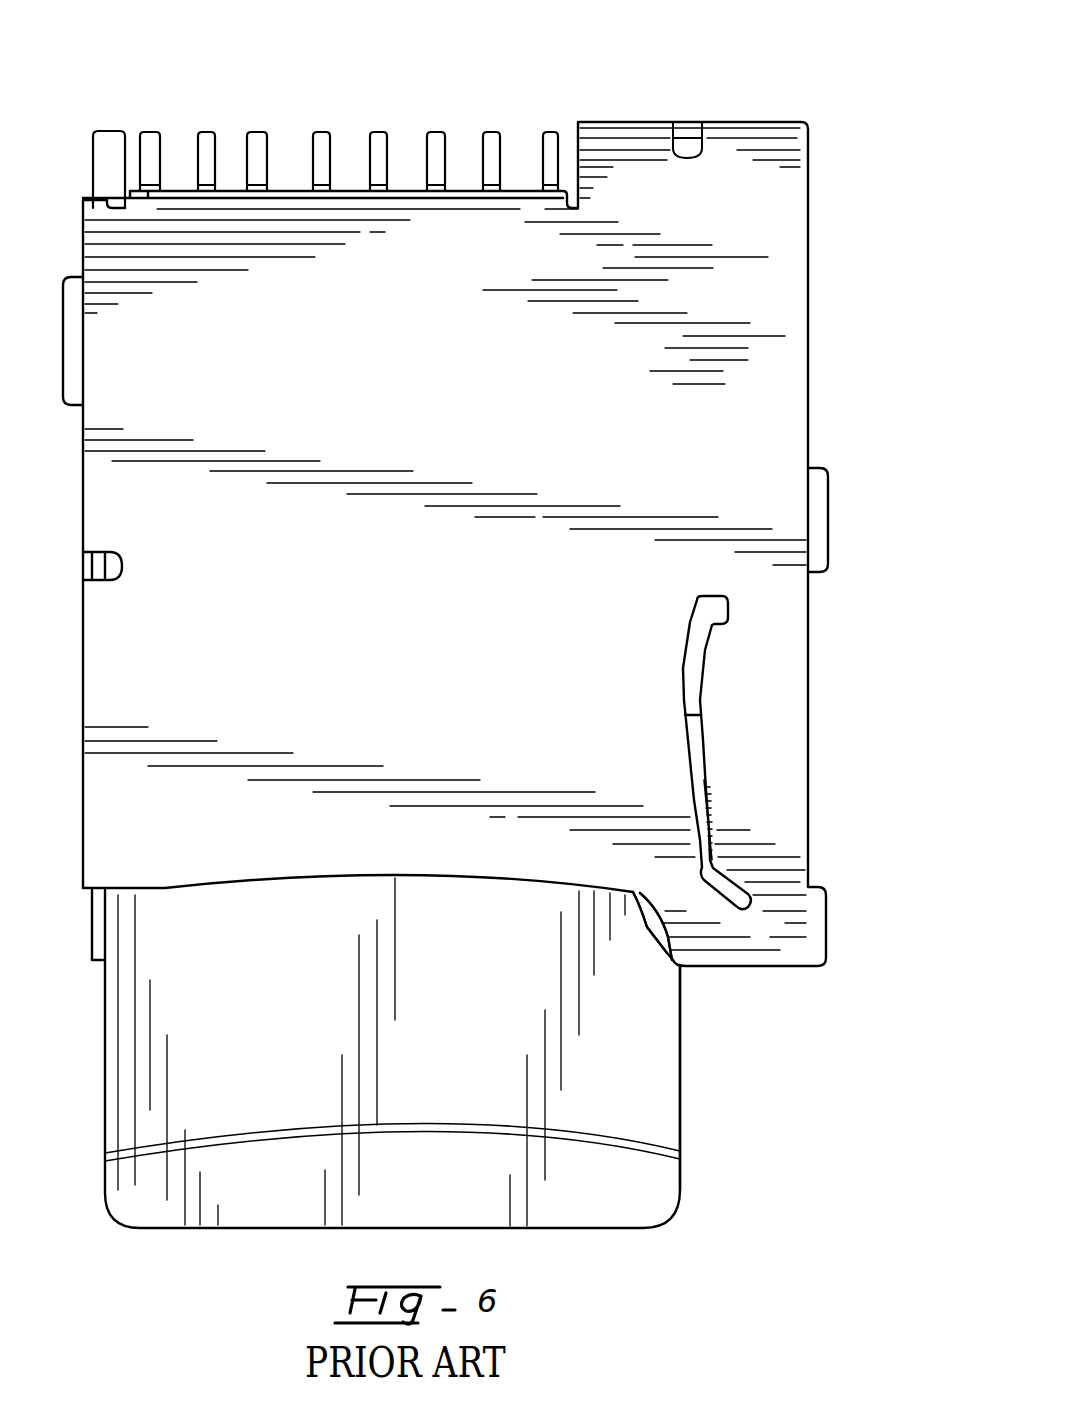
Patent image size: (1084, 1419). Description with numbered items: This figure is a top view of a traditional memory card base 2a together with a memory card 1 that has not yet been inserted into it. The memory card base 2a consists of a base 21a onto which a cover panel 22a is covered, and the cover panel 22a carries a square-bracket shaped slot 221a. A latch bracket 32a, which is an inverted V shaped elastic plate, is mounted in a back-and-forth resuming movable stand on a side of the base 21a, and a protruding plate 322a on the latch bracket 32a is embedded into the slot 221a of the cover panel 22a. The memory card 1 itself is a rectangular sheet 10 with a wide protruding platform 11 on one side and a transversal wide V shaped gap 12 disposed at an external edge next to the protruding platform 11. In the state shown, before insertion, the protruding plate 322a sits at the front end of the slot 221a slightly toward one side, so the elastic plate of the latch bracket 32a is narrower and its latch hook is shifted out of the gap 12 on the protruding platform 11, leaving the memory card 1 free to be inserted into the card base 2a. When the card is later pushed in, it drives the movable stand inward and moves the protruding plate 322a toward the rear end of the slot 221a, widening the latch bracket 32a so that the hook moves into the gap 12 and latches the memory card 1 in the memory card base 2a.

The traditional memory card base 2a is at (532, 123).
The base 21a is at (402, 187).
The cover panel 22a is at (808, 287).
The "[" shaped slot 221a is at (810, 752).
The protruding plate 322a is at (709, 833).
The latch bracket 32a is at (714, 869).
The memory card 1 is at (478, 1053).
The rectangular sheet 10 is at (603, 1076).
The wide protruding platform 11 is at (685, 1053).
The transversal wide "V" shaped gap 12 is at (648, 928).